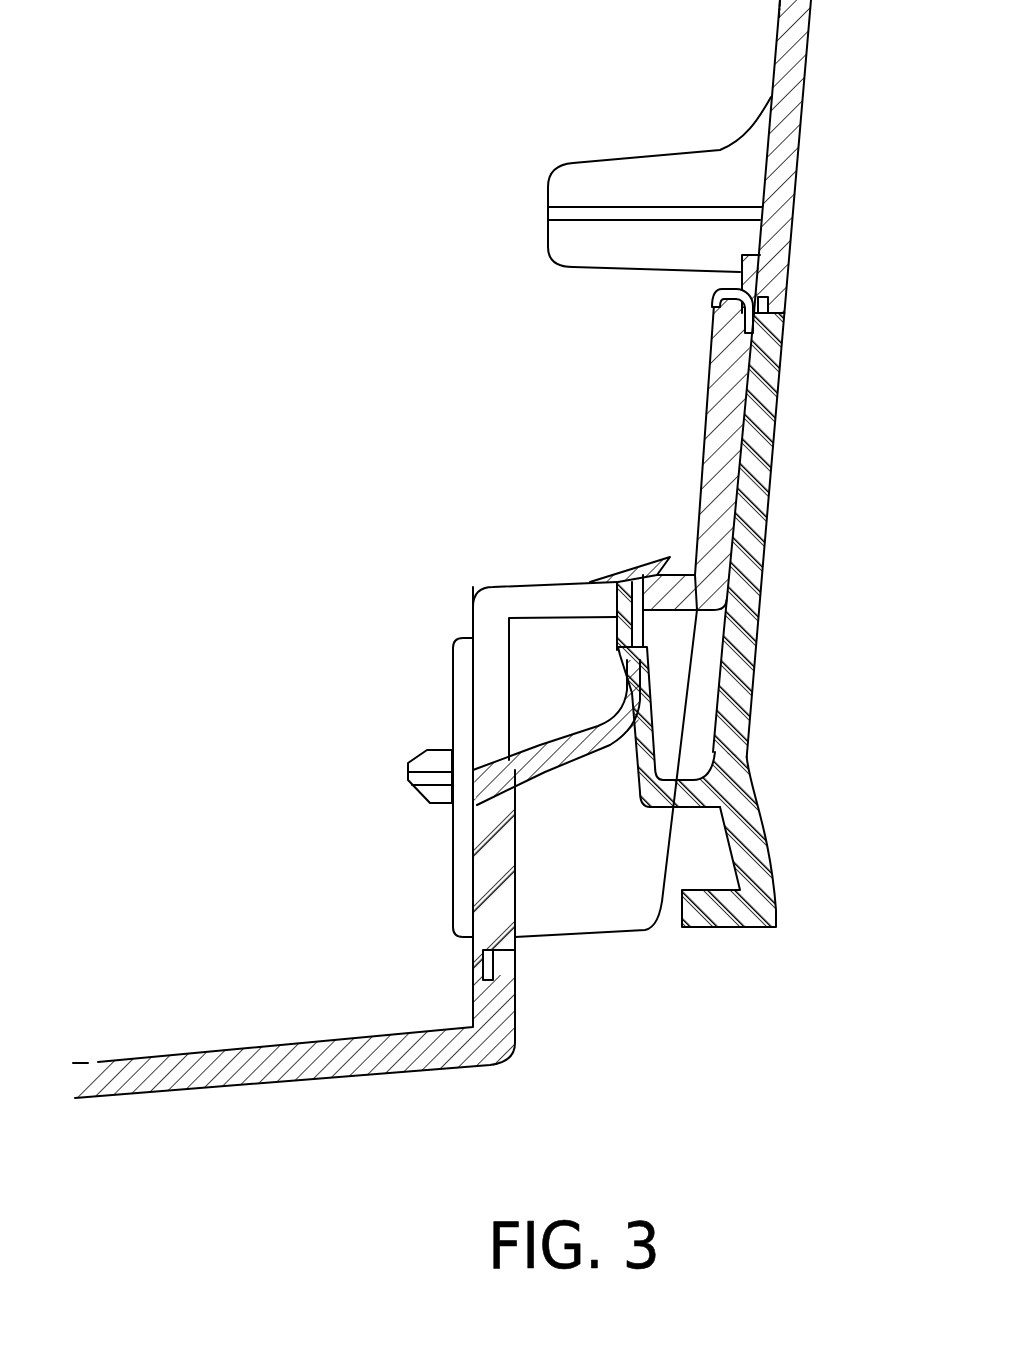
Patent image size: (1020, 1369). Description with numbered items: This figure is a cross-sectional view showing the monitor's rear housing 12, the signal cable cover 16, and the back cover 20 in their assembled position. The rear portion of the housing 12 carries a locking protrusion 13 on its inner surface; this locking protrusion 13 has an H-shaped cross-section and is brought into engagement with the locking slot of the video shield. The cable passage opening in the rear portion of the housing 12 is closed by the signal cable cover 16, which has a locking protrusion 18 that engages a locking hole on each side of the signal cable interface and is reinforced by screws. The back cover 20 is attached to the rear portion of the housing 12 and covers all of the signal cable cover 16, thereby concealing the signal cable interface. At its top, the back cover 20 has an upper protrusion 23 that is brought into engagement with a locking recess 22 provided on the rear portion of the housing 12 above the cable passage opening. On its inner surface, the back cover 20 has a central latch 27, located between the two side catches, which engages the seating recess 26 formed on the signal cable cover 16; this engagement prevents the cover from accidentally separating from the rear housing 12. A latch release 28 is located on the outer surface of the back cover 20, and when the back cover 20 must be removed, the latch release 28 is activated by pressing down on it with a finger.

The housing 12 is at (782, 142).
The locking protrusion 13 is at (620, 238).
The signal cable cover 16 is at (550, 752).
The locking protrusion 18 is at (430, 790).
The back cover 20 is at (740, 620).
The locking recess 22 is at (716, 318).
The upper protrusion 23 is at (770, 285).
The seating recess 26 is at (620, 655).
The central latch 27 is at (642, 693).
The latch release 28 is at (778, 916).